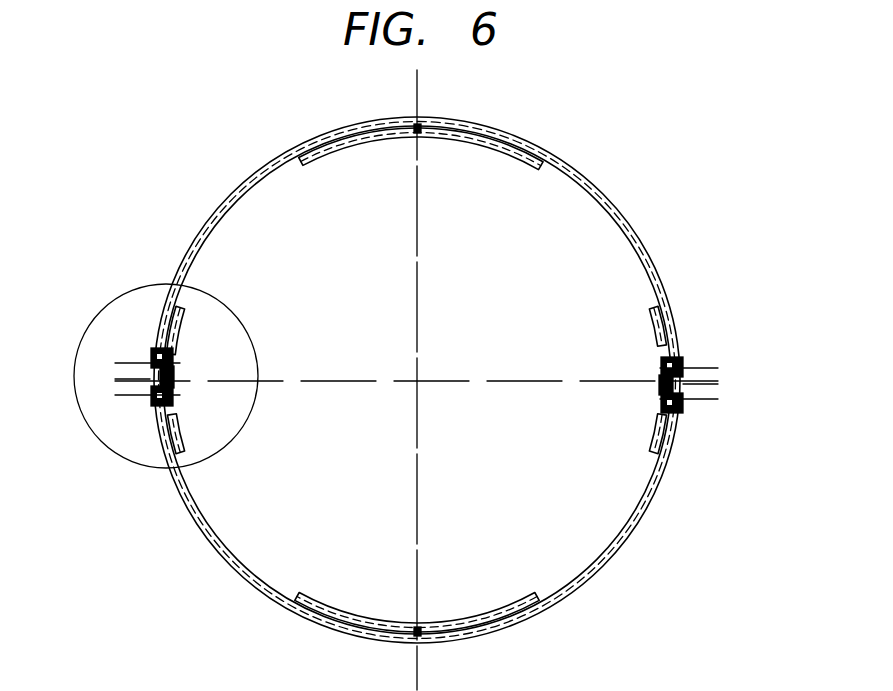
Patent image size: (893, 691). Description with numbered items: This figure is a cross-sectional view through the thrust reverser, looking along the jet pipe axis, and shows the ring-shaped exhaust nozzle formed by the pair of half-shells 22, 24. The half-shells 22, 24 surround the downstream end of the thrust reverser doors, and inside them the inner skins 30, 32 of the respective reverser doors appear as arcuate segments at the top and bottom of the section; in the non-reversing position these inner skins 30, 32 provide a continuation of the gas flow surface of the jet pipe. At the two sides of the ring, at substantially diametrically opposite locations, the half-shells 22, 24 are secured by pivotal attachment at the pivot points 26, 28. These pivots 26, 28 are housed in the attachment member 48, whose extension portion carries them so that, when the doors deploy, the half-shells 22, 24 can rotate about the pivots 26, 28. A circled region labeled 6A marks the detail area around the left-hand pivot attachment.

The half-shell 22 is at (540, 148).
The half-shell 24 is at (181, 483).
The pivot point 26 is at (160, 396).
The pivot point 28 is at (158, 351).
The inner skin 30 is at (329, 157).
The inner skin 32 is at (458, 617).
The attachment member 48 is at (157, 380).
The detail view circle for FIG. 6A is at (242, 322).